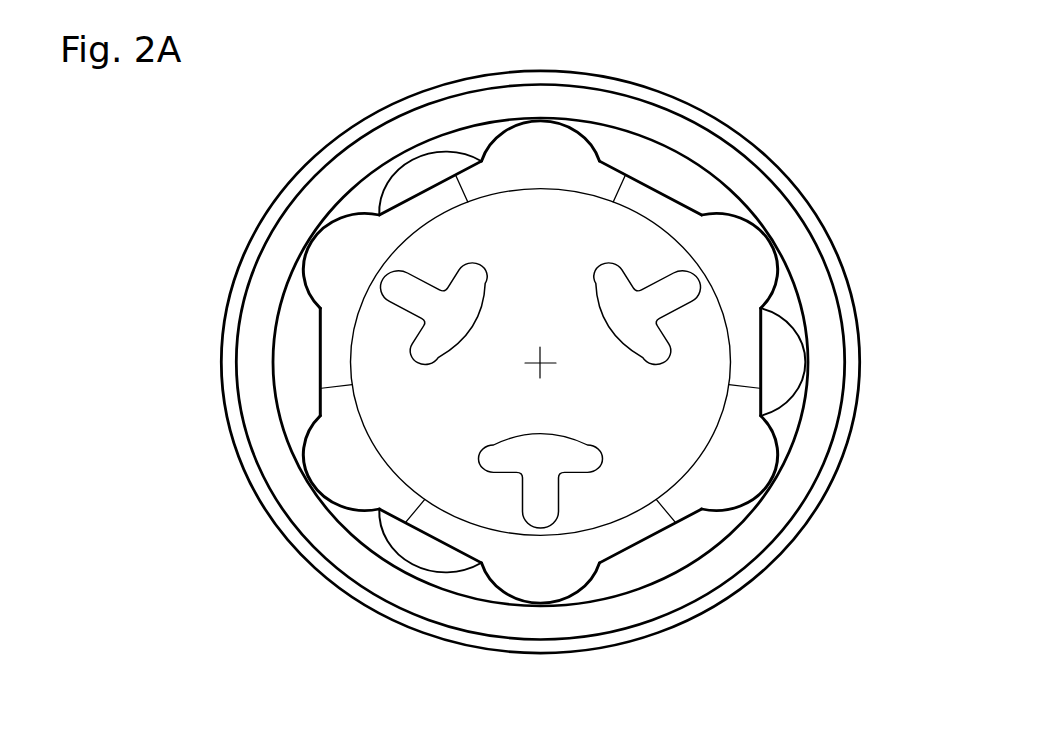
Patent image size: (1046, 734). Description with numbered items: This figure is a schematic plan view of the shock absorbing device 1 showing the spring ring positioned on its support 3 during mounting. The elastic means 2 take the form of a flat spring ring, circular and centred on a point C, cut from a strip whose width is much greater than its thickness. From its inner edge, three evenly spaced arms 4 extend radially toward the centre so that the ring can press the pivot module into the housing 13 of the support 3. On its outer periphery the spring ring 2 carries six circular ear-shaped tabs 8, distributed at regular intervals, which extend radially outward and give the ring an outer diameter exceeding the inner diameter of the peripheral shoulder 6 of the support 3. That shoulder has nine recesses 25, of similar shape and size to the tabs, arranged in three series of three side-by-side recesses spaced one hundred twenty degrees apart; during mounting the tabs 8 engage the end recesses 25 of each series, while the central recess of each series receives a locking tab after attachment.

The shock absorbing device 1 is at (571, 332).
The elastic means 2 is at (648, 190).
The support 3 is at (833, 483).
The arms 4 is at (663, 300).
The peripheral shoulder 6 is at (793, 418).
The tabs 8 is at (542, 143).
The housing 13 is at (430, 470).
The recesses 25 is at (500, 130).